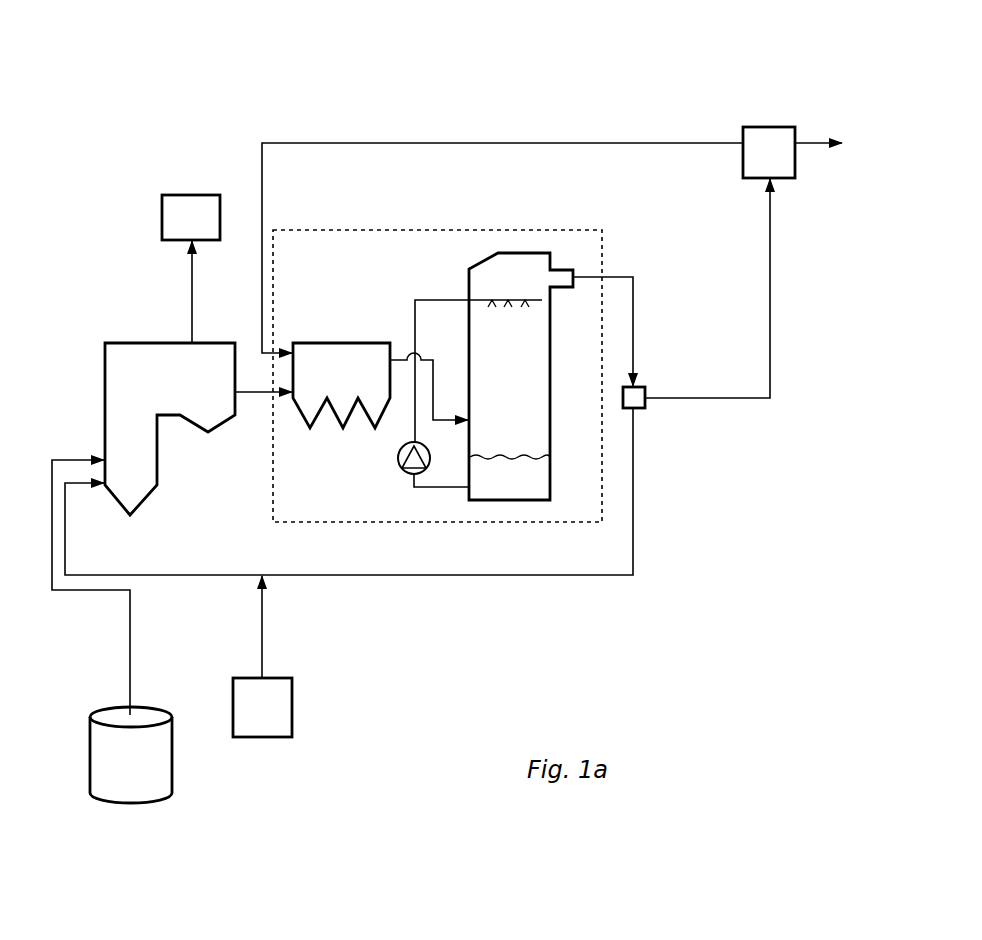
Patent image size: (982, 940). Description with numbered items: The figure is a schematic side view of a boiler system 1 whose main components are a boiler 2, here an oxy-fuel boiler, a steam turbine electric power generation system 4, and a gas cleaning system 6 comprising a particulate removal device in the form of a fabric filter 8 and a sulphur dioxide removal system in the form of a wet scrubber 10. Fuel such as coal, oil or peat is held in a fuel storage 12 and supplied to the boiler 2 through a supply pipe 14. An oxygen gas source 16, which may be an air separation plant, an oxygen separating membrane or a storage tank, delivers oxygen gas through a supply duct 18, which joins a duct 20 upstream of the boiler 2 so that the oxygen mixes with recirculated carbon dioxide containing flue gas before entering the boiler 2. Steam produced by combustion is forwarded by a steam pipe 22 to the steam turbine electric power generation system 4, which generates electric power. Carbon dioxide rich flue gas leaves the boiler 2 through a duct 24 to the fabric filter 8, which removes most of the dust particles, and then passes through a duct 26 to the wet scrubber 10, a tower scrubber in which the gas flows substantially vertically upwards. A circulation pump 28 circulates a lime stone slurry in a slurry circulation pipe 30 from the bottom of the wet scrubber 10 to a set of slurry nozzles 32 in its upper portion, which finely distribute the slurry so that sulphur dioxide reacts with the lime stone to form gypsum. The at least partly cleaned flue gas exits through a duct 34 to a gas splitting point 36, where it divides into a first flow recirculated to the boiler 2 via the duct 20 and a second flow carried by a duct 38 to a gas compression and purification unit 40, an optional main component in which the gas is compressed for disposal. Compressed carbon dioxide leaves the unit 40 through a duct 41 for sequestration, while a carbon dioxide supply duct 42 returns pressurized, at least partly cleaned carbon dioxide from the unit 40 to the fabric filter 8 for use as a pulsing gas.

The boiler system 1 is at (122, 84).
The boiler 2 is at (120, 417).
The steam turbine electric power generation system 4 is at (162, 220).
The gas cleaning system 6 is at (444, 226).
The fabric filter 8 is at (320, 343).
The wet scrubber 10 is at (535, 253).
The fuel storage 12 is at (162, 765).
The supply pipe 14 is at (130, 610).
The oxygen gas source 16 is at (292, 710).
The supply duct 18 is at (262, 628).
The duct 20 is at (378, 577).
The steam pipe 22 is at (192, 298).
The duct 24 is at (243, 394).
The duct 26 is at (407, 358).
The circulation pump 28 is at (398, 460).
The slurry circulation pipe 30 is at (437, 300).
The slurry nozzles 32 is at (526, 305).
The duct 34 is at (633, 312).
The gas splitting point 36 is at (645, 408).
The duct 38 is at (770, 248).
The gas compression and purification unit 40 is at (743, 132).
The duct 41 is at (815, 143).
The carbon dioxide supply duct 42 is at (413, 143).